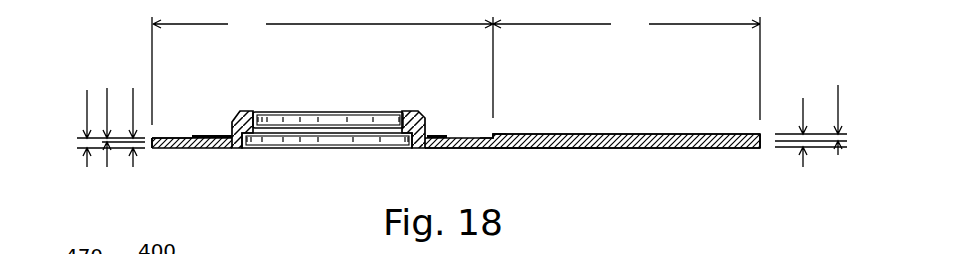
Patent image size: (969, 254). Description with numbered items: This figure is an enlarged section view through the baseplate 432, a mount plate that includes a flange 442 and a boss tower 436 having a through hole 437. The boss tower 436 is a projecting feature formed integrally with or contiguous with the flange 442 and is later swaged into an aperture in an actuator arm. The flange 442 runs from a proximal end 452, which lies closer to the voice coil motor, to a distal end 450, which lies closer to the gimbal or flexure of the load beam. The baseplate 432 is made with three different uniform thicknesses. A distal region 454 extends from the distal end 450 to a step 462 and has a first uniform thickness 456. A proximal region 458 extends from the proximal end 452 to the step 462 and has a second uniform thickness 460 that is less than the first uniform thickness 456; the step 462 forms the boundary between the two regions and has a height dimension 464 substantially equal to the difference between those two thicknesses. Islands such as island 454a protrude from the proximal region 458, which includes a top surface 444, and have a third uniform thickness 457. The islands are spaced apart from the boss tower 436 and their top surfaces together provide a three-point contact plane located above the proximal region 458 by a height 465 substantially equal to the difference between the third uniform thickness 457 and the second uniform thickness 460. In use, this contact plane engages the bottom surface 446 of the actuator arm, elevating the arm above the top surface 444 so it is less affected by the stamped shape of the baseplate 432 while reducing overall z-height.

The baseplate 432 is at (687, 96).
The boss tower 436 is at (423, 111).
The through hole 437 is at (380, 102).
The flange 442 is at (614, 160).
The top surface 444 is at (170, 128).
The bottom surface 446 is at (511, 162).
The distal end 450 is at (760, 143).
The proximal end 452 is at (152, 147).
The distal region 454 is at (626, 67).
The island 454a is at (203, 134).
The first uniform thickness 456 is at (803, 98).
The third uniform thickness 457 is at (133, 96).
The proximal region 458 is at (463, 134).
The second uniform thickness 460 is at (87, 103).
The step 462 is at (488, 134).
The height dimension 464 is at (838, 103).
The height 465 is at (107, 96).